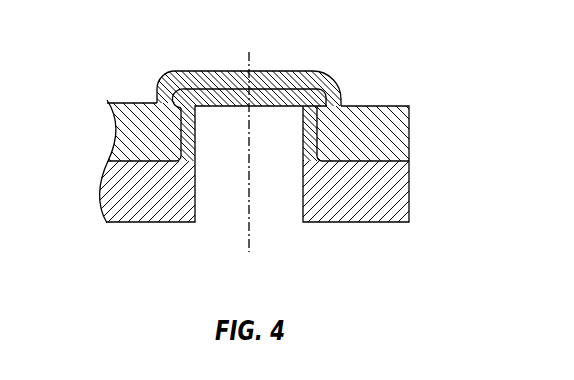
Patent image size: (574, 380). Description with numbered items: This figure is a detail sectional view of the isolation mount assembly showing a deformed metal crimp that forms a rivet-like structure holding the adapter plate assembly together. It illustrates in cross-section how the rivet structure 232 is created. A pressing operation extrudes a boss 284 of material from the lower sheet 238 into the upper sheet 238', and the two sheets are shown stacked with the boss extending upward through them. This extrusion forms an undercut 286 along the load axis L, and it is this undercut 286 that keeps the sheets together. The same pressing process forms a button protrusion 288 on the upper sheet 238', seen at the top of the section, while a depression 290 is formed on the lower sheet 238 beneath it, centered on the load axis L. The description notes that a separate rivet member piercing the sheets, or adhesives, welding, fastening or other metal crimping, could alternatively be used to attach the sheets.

The rivet structure 232 is at (350, 68).
The lower sheet 238 is at (283, 163).
The upper sheet 238' is at (286, 132).
The boss 284 is at (306, 124).
The undercut 286 is at (325, 98).
The button protrusion 288 is at (278, 69).
The depression 290 is at (273, 202).
The load axis L is at (248, 237).